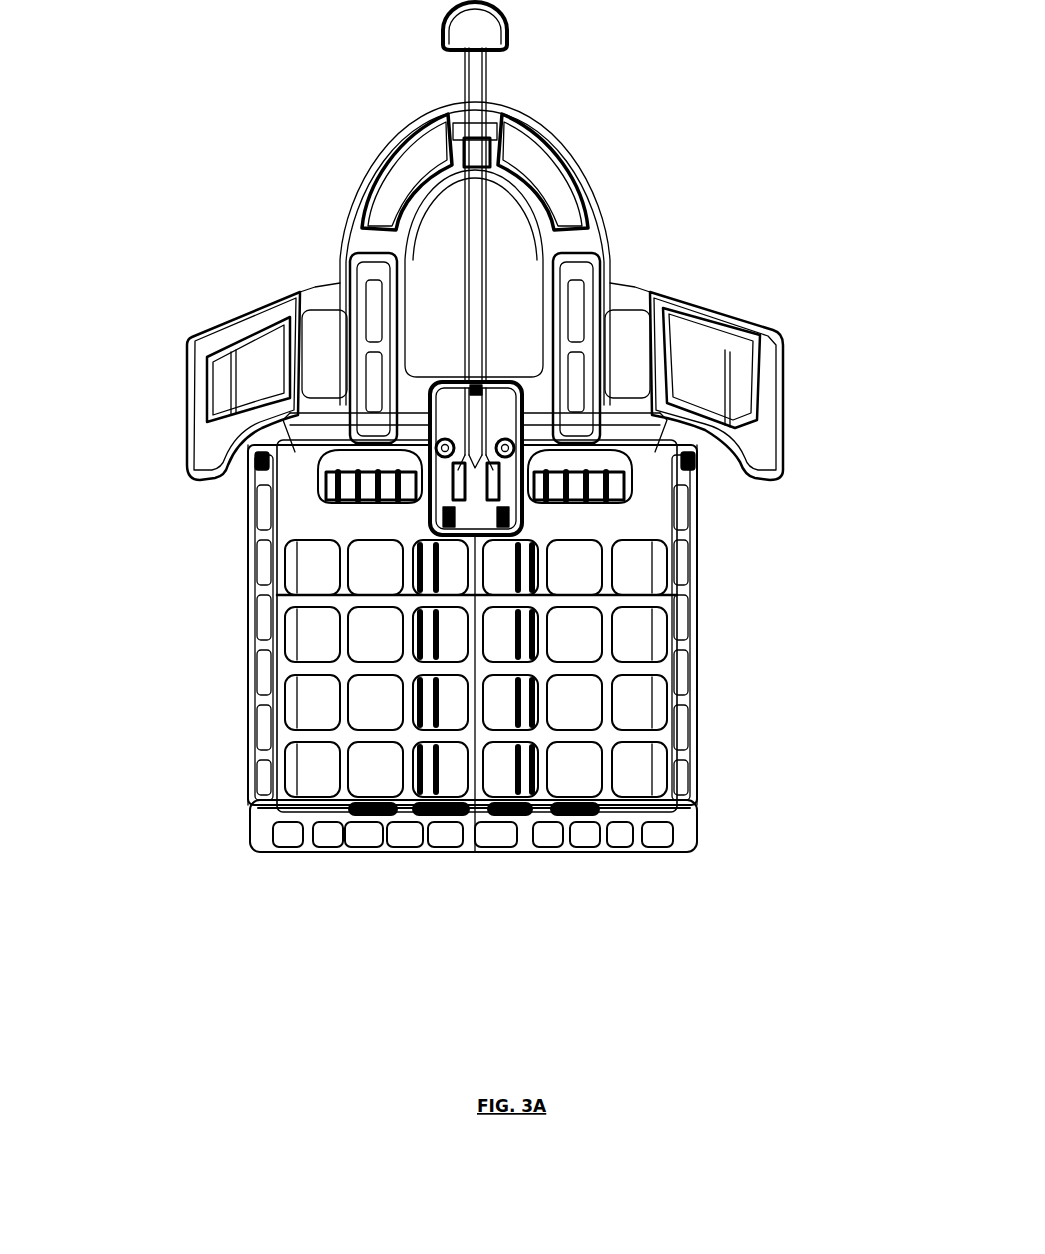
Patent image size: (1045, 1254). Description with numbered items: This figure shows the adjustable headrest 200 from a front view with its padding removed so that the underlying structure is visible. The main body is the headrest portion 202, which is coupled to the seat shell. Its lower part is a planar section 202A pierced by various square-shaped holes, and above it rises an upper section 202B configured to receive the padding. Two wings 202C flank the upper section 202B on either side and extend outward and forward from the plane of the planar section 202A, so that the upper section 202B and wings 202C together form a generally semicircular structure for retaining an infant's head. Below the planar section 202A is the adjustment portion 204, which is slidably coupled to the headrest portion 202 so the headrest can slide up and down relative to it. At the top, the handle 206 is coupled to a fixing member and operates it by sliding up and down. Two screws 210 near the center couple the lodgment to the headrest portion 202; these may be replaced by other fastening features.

The adjustable headrest 200 is at (489, 490).
The headrest portion 202 is at (658, 445).
The planar section 202A is at (550, 600).
The upper section 202B is at (508, 116).
The wings 202C is at (205, 458).
The adjustment portion 204 is at (680, 822).
The handle 206 is at (510, 17).
The screws 210 is at (505, 440).